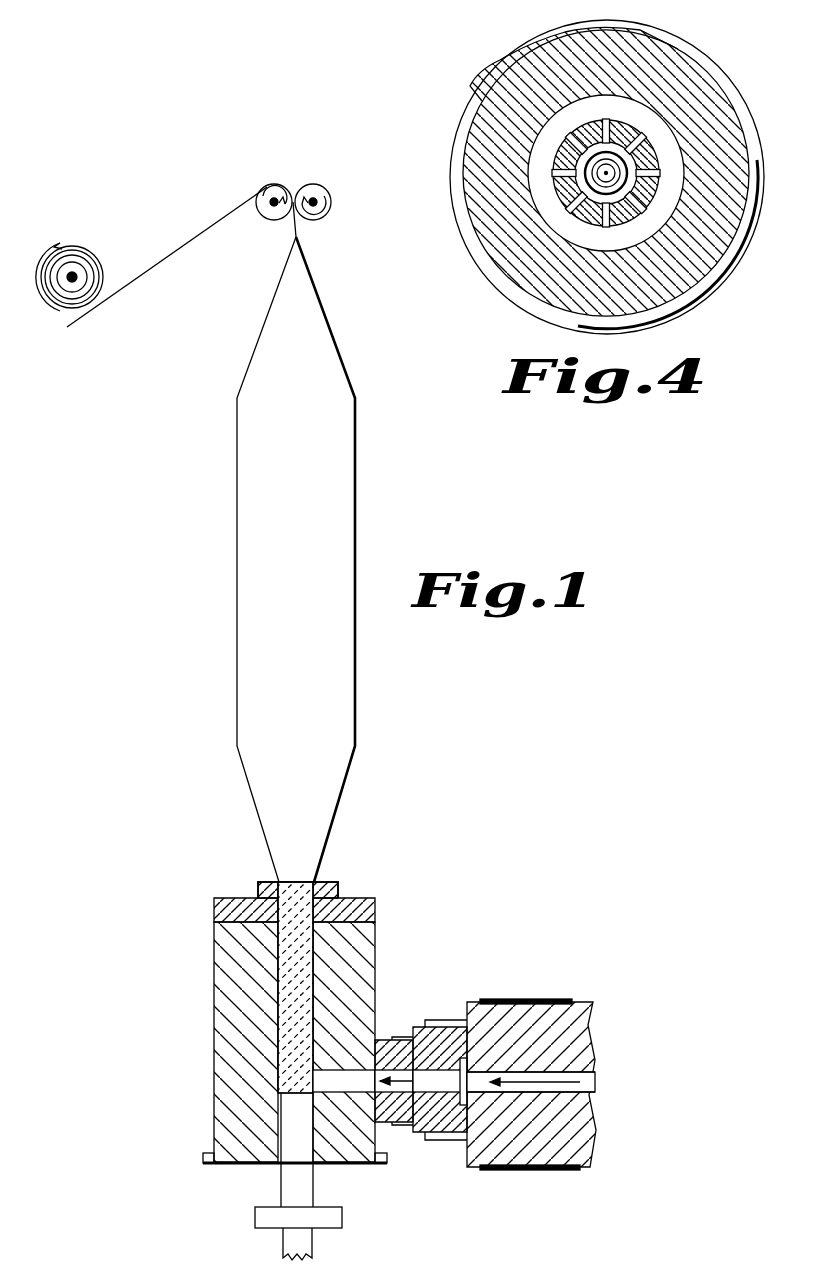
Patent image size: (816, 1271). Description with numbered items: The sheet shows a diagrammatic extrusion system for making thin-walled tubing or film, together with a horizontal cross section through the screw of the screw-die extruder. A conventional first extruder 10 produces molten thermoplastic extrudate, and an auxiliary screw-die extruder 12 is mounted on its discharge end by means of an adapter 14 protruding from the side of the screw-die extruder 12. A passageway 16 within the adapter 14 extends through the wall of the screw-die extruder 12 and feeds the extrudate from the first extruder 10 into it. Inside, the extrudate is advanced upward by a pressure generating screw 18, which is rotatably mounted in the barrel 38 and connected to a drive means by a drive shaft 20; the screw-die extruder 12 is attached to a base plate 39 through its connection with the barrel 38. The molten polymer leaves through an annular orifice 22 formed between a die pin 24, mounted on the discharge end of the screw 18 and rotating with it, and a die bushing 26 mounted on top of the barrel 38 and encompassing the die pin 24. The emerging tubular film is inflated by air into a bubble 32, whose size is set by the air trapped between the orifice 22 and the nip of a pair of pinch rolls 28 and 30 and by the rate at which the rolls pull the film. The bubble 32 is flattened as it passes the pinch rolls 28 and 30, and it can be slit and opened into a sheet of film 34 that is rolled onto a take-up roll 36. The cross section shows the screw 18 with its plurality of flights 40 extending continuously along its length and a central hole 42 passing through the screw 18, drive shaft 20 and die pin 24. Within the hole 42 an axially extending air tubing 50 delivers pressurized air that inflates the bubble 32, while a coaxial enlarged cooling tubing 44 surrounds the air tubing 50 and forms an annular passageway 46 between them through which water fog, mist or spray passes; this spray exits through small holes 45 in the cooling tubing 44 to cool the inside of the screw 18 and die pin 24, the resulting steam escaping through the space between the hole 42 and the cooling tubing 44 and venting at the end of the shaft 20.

In FIG. 1, the first extruder 10 is at (537, 1002).
In FIG. 1, the screw-die extruder 12 is at (295, 1045).
In FIG. 1, the adapter 14 is at (380, 1048).
In FIG. 1, the passageway 16 is at (385, 1105).
In FIG. 1, the pressure generating screw 18 is at (278, 1013).
In FIG. 4, the pressure generating screw 18 is at (525, 262).
In FIG. 1, the drive shaft 20 is at (281, 1182).
In FIG. 1, the annular orifice 22 is at (262, 882).
In FIG. 1, the die pin 24 is at (300, 880).
In FIG. 1, the die bushing 26 is at (348, 898).
In FIG. 1, the pinch roll 28 is at (268, 186).
In FIG. 1, the pinch roll 30 is at (327, 188).
In FIG. 1, the bubble of film 32 is at (357, 515).
In FIG. 1, the sheet of film 34 is at (128, 283).
In FIG. 1, the take-up roll 36 is at (69, 297).
In FIG. 1, the barrel 38 is at (232, 965).
In FIG. 1, the base plate 39 is at (203, 1162).
In FIG. 4, the flights 40 is at (453, 140).
In FIG. 4, the hole 42 is at (546, 205).
In FIG. 4, the cooling tubing 44 is at (623, 218).
In FIG. 4, the small hole 45 is at (590, 150).
In FIG. 4, the annular passageway 46 is at (590, 207).
In FIG. 4, the air tubing 50 is at (611, 140).